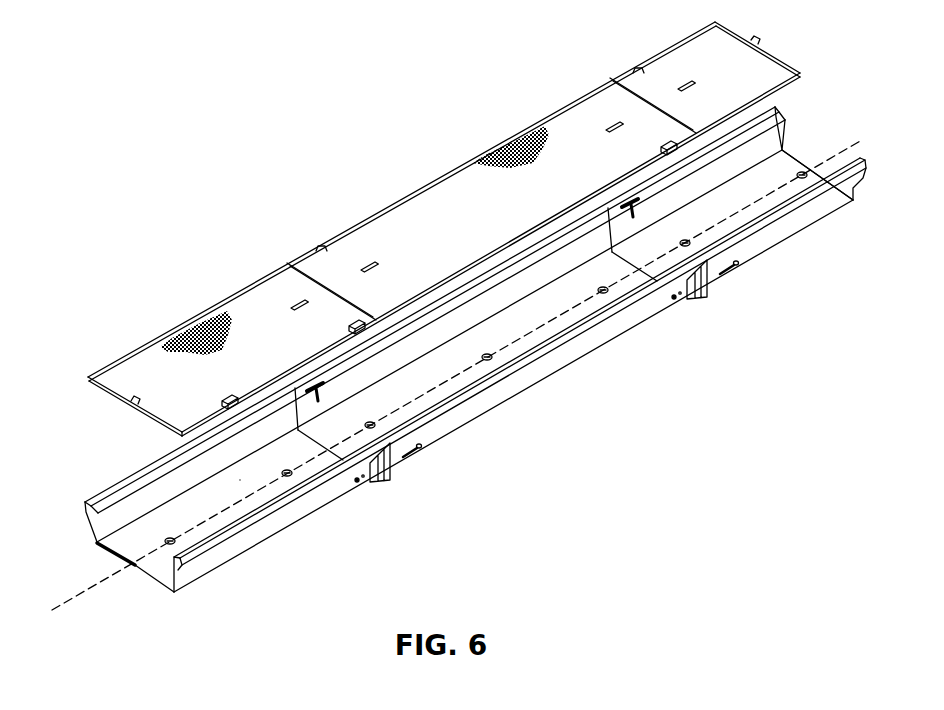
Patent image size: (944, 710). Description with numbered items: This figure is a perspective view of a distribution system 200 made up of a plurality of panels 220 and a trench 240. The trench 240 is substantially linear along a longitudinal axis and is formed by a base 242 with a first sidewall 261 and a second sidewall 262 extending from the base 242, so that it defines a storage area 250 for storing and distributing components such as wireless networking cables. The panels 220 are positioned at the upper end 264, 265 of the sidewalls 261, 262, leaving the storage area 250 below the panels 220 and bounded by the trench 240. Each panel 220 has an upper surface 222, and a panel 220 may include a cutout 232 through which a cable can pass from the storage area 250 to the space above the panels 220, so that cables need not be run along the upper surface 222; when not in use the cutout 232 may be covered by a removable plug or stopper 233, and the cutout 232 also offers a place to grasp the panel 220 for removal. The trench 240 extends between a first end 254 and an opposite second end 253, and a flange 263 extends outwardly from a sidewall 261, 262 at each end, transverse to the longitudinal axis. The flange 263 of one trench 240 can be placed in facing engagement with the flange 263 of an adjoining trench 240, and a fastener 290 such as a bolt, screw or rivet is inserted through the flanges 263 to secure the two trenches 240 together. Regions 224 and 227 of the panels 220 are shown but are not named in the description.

The distribution system 200 is at (147, 215).
The panel 220 is at (400, 212).
The upper surface 222 is at (489, 223).
The perforated region of cover 224 is at (520, 140).
The end cover panel 227 is at (590, 108).
The cutout 232 is at (360, 320).
The plug or stopper 233 is at (229, 392).
The trench 240 is at (44, 492).
The base 242 is at (158, 573).
The storage area 250 is at (236, 480).
The second end 253 is at (803, 160).
The first end 254 is at (100, 550).
The first sidewall 261 is at (97, 525).
The second sidewall 262 is at (186, 582).
The flange 263 is at (381, 487).
The upper end of first sidewall 264 is at (114, 487).
The upper end of second sidewall 265 is at (218, 533).
The fastener 290 is at (410, 455).